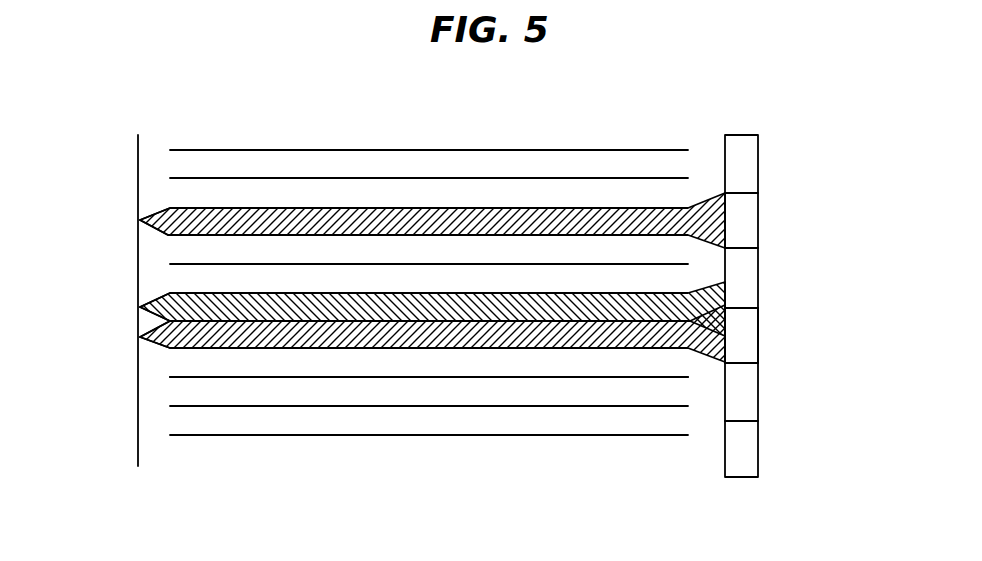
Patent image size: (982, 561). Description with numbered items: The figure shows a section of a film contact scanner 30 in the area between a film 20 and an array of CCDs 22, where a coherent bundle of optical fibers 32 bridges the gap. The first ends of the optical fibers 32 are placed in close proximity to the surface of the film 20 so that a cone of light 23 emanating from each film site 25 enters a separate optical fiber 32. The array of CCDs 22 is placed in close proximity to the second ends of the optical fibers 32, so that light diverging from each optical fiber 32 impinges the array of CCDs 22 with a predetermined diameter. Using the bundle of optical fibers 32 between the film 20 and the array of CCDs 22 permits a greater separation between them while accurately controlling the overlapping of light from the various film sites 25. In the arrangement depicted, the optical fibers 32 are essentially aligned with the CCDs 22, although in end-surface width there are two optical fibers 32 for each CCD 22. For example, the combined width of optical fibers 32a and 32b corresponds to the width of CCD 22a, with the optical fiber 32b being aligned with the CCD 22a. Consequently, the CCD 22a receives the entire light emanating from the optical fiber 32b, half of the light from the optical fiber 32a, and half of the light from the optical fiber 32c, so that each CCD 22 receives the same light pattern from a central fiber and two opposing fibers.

The film 20 is at (140, 140).
The array of CCDs 22 is at (748, 170).
The CCD 22a is at (750, 320).
The cone of light 23 is at (158, 215).
The film site 25 is at (160, 232).
The film contact scanner 30 is at (579, 86).
The optical fibers 32 is at (400, 273).
The optical fiber 32a is at (460, 316).
The optical fiber 32b is at (528, 343).
The optical fiber 32c is at (630, 365).